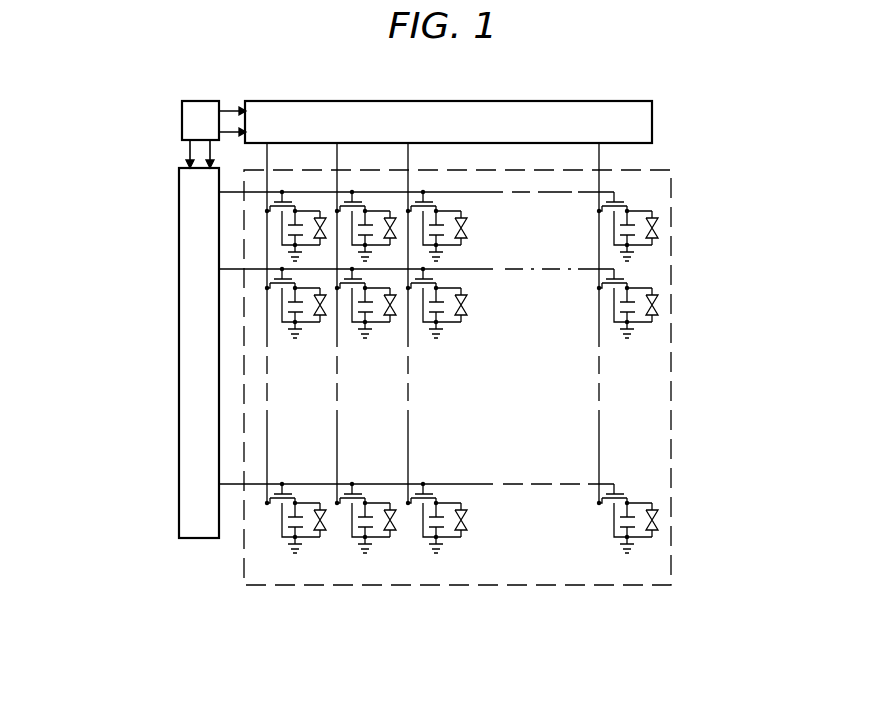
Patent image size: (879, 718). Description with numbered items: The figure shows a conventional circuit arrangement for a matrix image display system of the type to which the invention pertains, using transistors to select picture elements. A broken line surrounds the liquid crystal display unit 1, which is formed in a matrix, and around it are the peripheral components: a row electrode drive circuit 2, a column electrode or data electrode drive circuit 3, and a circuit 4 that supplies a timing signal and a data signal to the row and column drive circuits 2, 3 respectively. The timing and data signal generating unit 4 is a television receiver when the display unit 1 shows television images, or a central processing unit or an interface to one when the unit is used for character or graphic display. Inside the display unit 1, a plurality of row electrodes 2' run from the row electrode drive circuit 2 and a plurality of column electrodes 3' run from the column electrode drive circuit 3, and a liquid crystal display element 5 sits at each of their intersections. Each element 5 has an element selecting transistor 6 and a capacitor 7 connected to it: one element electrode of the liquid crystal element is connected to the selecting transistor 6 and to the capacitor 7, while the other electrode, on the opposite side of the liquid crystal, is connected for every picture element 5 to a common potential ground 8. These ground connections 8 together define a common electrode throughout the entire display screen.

The liquid crystal display unit 1 is at (330, 587).
The row electrode drive circuit 2 is at (131, 353).
The row electrode 2' is at (416, 338).
The column electrode drive circuit 3 is at (448, 109).
The column electrode 3' is at (449, 323).
The timing and data signal generating unit 4 is at (193, 110).
The liquid crystal display element 5 is at (660, 231).
The element selecting transistor 6 is at (288, 202).
The capacitor 7 is at (613, 306).
The common potential ground 8 is at (441, 257).